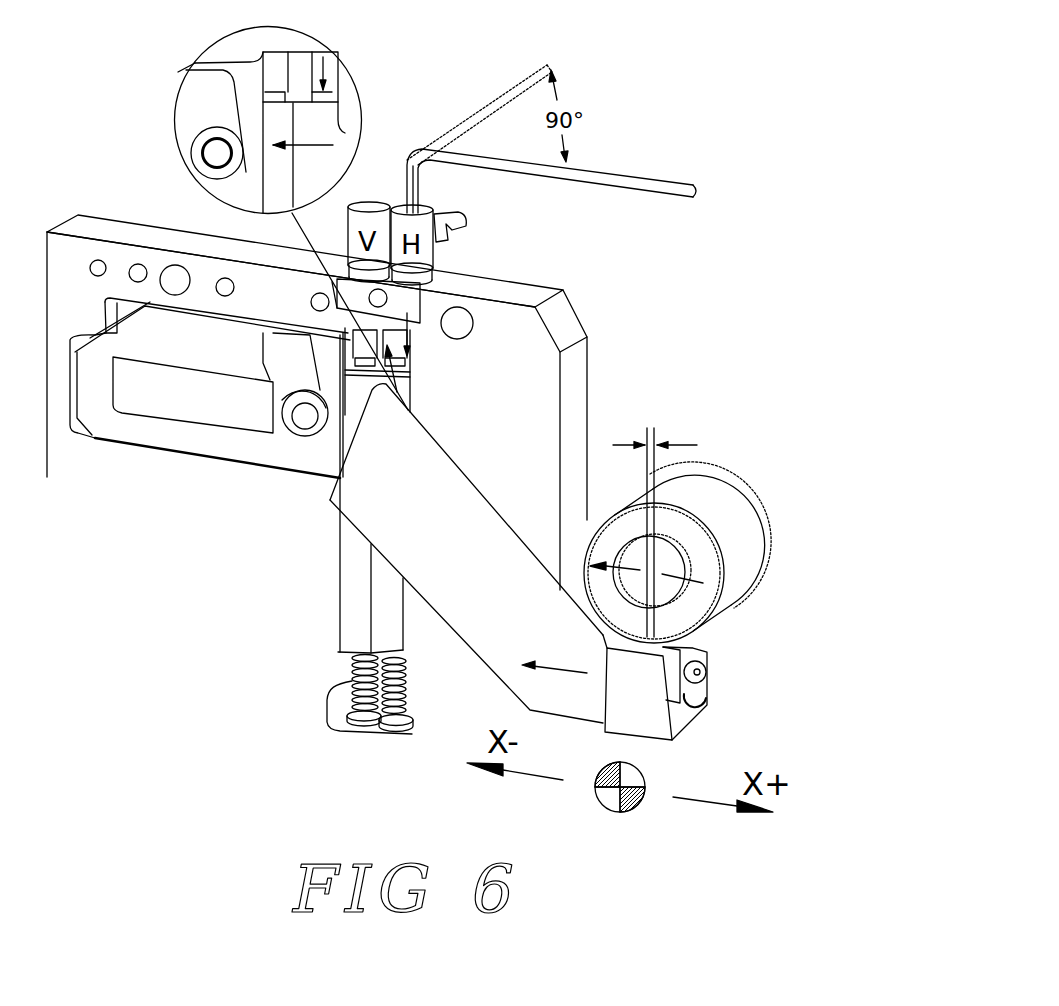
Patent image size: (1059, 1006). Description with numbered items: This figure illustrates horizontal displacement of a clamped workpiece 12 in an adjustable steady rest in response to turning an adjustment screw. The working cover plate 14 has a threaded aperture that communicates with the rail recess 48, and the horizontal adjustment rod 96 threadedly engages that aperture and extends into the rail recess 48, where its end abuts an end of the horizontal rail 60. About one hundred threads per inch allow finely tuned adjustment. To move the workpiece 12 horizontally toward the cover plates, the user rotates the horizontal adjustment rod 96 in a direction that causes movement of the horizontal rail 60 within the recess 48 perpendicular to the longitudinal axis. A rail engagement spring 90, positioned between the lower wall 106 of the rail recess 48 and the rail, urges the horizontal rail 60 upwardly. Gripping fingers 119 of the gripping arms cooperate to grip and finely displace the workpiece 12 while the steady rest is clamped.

The working cover plate 14 is at (145, 232).
The rail recess 48 is at (357, 457).
The horizontal rail 60 is at (392, 613).
The rail engagement spring 90 is at (398, 688).
The horizontal adjustment rod 96 is at (417, 358).
The lower wall 106 is at (392, 730).
The workpiece 12 is at (710, 515).
The gripping finger 119 is at (700, 650).